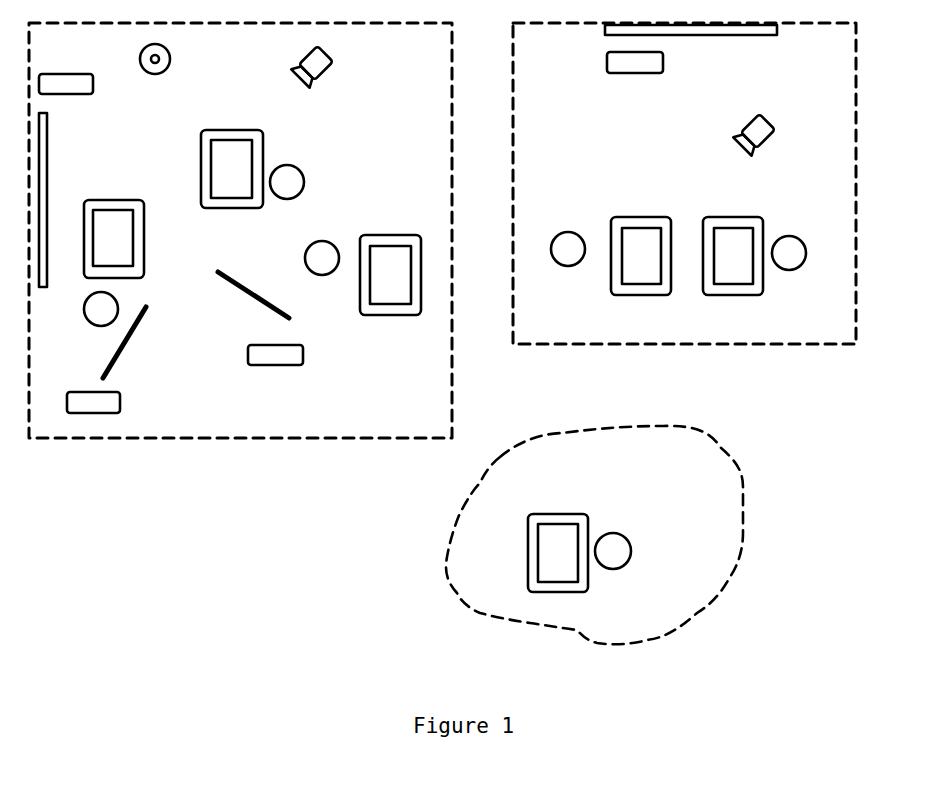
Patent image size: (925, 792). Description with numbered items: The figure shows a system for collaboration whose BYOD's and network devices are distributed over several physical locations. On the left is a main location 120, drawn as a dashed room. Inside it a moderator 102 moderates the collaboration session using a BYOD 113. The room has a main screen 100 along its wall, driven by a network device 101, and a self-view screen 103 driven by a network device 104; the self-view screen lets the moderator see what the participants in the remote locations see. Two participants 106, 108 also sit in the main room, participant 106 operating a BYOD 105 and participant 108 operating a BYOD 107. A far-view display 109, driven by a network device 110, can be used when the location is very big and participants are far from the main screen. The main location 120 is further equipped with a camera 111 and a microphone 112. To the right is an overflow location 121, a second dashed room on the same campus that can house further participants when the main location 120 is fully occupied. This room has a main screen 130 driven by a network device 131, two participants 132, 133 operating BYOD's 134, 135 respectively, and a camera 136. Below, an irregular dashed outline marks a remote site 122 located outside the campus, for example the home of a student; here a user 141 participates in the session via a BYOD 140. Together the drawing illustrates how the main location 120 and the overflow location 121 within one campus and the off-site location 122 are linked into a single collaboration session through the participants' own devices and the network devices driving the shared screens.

The main screen 100 is at (47, 160).
The network device 101 is at (48, 73).
The moderator 102 is at (86, 297).
The self-view screen 103 is at (112, 358).
The network device 104 is at (120, 398).
The BYOD 105 is at (225, 130).
The participant 106 is at (287, 165).
The BYOD 107 is at (395, 235).
The participant 108 is at (319, 241).
The far-view display 109 is at (272, 305).
The network device 110 is at (303, 352).
The camera 111 is at (324, 56).
The microphone 112 is at (170, 55).
The BYOD 113 is at (145, 227).
The main location 120 is at (452, 367).
The overflow location 121 is at (725, 344).
The remote site 122 is at (743, 485).
The main screen 130 is at (755, 35).
The network device 131 is at (607, 60).
The participant 132 is at (553, 244).
The participant 133 is at (777, 237).
The BYOD 134 is at (638, 217).
The BYOD 135 is at (715, 217).
The camera 136 is at (770, 120).
The BYOD 140 is at (540, 514).
The user 141 is at (612, 533).